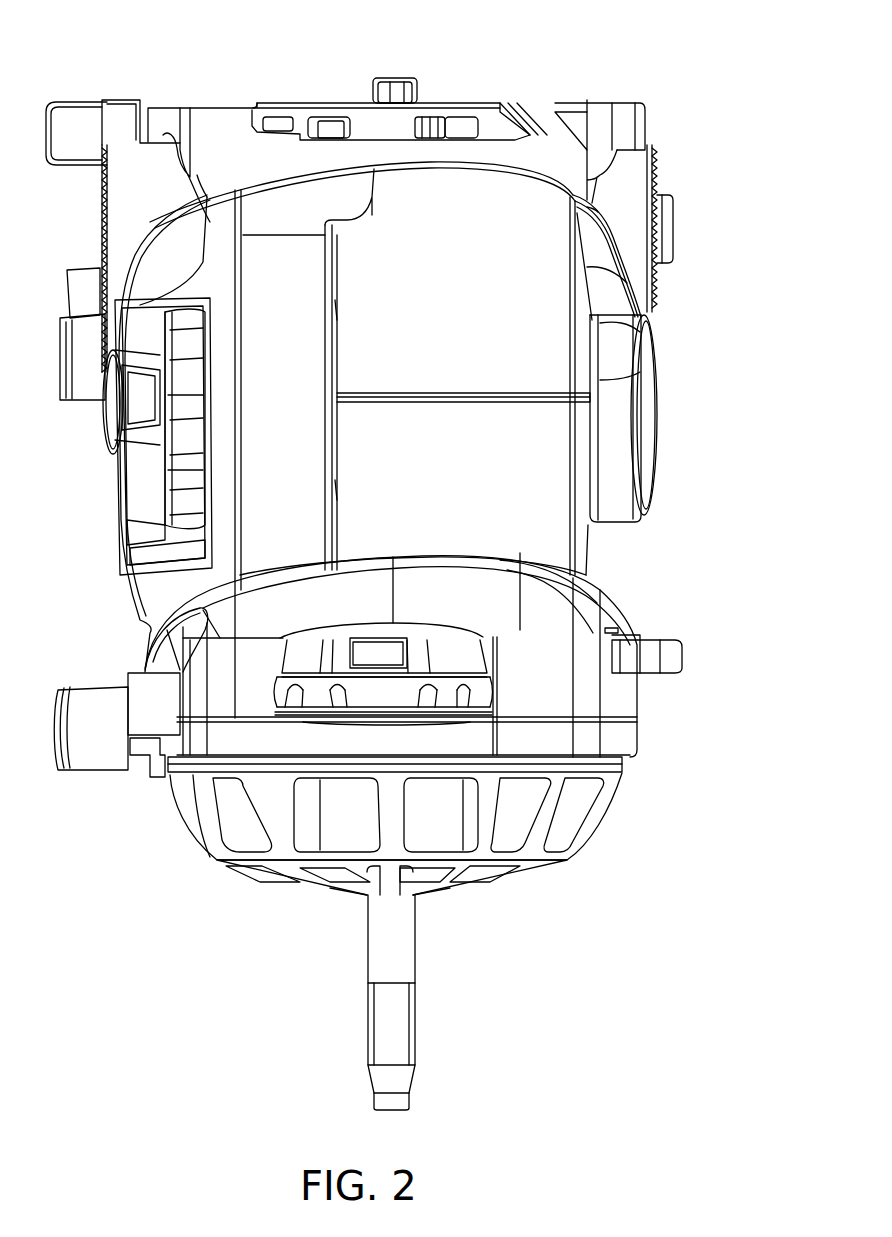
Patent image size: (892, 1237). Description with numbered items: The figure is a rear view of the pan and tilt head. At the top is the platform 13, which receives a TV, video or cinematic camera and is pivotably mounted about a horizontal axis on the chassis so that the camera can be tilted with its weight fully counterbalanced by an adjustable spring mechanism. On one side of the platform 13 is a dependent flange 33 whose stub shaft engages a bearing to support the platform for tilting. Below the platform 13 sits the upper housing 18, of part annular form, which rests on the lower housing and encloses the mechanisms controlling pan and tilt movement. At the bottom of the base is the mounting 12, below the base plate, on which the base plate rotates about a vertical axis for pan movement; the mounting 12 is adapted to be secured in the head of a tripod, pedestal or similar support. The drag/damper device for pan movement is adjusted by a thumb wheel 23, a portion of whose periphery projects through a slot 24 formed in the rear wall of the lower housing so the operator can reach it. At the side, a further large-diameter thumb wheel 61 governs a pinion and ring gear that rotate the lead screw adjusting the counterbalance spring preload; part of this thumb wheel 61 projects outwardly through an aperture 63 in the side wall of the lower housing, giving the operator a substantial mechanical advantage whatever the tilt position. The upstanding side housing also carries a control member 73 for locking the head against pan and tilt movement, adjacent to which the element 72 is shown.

The mounting 12 is at (216, 848).
The platform 13 is at (232, 122).
The upper housing 18 is at (585, 343).
The thumb wheel 23 is at (480, 690).
The slot 24 is at (455, 715).
The dependent flange 33 is at (595, 238).
The thumb wheel 61 is at (678, 652).
The aperture 63 is at (594, 607).
The adjustment dial 72 is at (180, 482).
The control member 73 is at (141, 478).